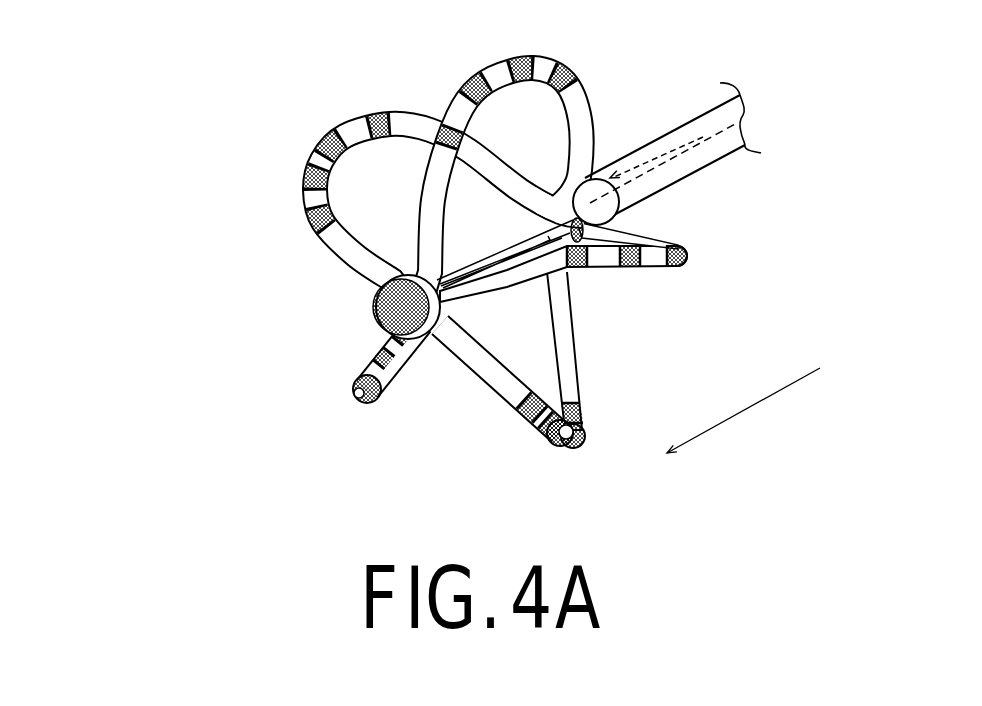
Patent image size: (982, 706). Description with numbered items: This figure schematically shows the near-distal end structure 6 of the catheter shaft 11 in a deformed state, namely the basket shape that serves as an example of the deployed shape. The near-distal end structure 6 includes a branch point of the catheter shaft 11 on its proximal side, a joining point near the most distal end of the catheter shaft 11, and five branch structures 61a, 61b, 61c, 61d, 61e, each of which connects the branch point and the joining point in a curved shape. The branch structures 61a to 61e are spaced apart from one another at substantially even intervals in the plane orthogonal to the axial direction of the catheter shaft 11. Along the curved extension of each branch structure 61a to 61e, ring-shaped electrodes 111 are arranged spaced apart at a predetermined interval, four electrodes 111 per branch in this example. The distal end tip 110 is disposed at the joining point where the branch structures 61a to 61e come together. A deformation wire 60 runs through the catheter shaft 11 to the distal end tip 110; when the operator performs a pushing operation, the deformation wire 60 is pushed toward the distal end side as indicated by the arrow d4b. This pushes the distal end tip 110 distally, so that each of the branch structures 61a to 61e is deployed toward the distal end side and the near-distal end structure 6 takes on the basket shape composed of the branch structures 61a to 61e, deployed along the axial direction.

The near-distal end structure 6 is at (205, 157).
The catheter shaft 11 is at (713, 153).
The deformation wire 60 is at (507, 243).
The branch structure 61a is at (427, 113).
The branch structure 61b is at (593, 75).
The branch structure 61c is at (523, 280).
The branch structure 61d is at (483, 380).
The branch structure 61e is at (387, 395).
The distal end tip 110 is at (378, 297).
The electrode 111 is at (555, 67).
The arrow indicating pushing direction of the deformation wire d4b is at (630, 160).